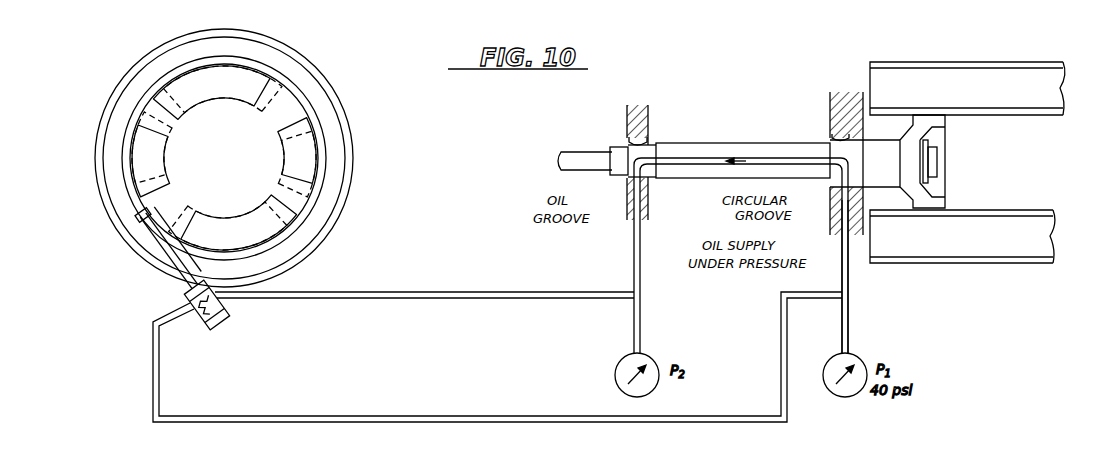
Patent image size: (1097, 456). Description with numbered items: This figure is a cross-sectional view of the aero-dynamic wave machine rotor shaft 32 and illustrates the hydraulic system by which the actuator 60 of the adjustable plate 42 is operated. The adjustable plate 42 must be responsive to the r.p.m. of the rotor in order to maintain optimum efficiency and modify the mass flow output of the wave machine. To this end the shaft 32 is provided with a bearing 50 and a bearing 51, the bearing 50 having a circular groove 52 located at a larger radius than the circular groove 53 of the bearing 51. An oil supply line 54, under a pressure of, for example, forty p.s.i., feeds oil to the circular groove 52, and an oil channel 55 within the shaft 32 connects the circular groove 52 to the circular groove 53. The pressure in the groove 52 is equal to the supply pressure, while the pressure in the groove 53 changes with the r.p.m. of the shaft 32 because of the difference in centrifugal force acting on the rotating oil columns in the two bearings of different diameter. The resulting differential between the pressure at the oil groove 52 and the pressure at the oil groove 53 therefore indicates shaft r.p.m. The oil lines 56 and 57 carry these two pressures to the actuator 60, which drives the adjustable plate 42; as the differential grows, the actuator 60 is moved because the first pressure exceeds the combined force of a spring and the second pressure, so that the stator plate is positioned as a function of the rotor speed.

The shaft 32 is at (588, 152).
The adjustable plate 42 is at (347, 115).
The bearing 50 is at (830, 102).
The bearing 51 is at (649, 123).
The circular groove 52 is at (838, 137).
The circular groove 53 is at (631, 138).
The oil supply line 54 is at (849, 329).
The oil channel 55 is at (697, 157).
The oil line 56 is at (412, 413).
The oil line 57 is at (412, 292).
The actuator 60 is at (214, 320).